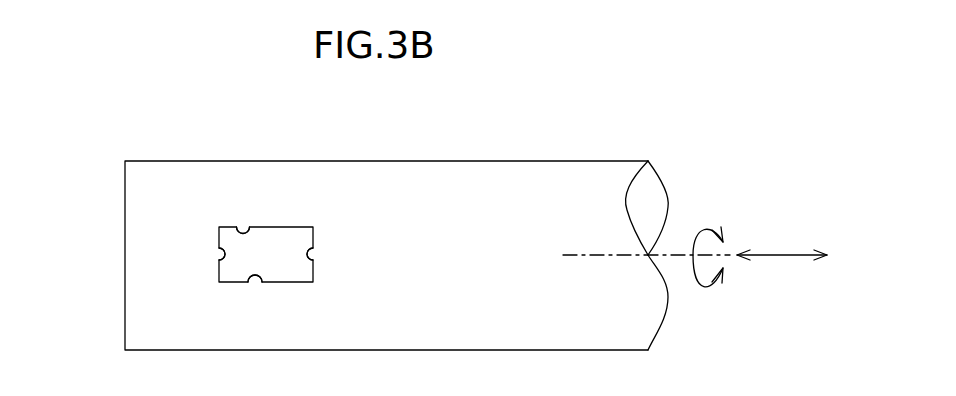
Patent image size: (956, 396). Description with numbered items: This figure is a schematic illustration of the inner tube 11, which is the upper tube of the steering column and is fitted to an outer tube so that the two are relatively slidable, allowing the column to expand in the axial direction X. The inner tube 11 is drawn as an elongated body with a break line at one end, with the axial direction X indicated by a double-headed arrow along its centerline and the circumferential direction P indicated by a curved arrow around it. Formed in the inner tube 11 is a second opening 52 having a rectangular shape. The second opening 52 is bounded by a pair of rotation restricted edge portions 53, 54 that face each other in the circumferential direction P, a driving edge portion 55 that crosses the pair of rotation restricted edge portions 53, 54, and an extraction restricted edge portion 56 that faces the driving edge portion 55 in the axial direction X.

The inner tube 11 is at (518, 160).
The second opening 52 is at (271, 239).
The rotation restricted edge portion 53 is at (242, 227).
The rotation restricted edge portion 54 is at (258, 282).
The driving edge portion 55 is at (313, 259).
The extraction restricted edge portion 56 is at (219, 259).
The axial direction X is at (781, 253).
The circumferential direction P is at (697, 284).